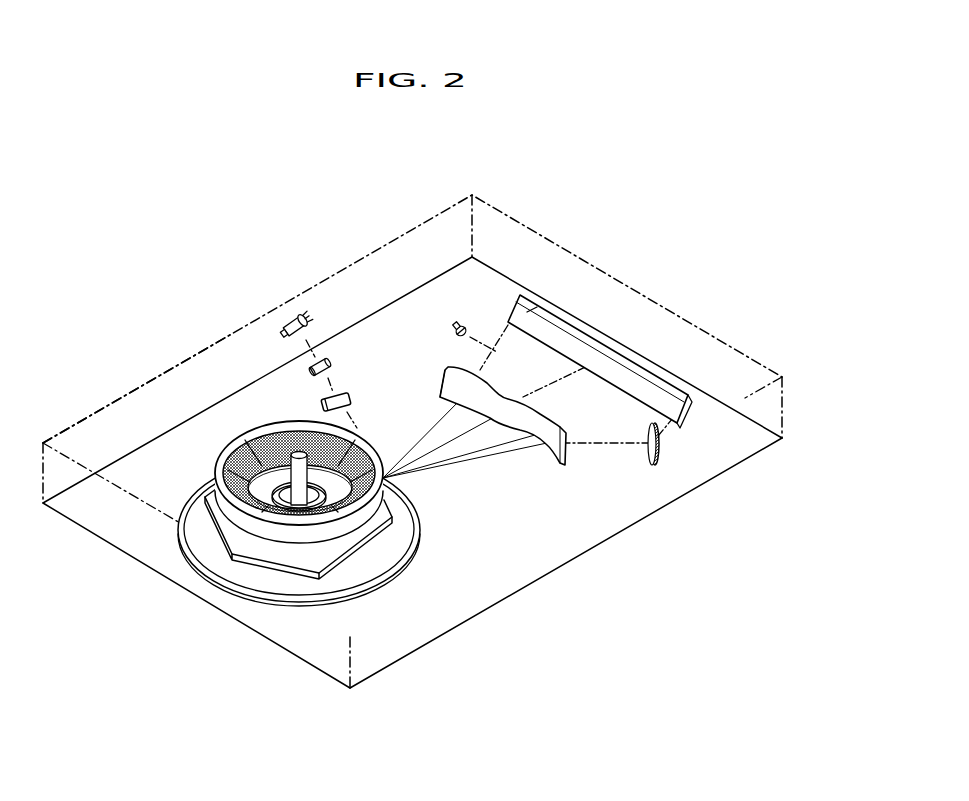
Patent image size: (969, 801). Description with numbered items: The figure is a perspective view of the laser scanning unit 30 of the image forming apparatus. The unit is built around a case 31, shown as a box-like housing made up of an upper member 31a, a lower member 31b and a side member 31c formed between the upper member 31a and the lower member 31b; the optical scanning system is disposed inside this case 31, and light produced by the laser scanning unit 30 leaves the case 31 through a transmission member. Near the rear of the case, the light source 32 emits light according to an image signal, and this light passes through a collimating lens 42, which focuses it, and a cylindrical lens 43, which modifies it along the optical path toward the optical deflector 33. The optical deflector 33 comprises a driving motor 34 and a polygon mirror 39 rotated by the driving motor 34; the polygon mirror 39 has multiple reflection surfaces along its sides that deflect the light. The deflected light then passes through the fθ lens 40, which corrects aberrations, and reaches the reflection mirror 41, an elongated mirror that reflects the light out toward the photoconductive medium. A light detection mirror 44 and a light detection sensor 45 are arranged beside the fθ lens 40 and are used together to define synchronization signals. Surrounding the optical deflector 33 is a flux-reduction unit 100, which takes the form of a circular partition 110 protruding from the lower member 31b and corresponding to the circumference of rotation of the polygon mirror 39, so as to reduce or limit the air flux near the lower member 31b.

The laser scanning unit 30 is at (640, 205).
The case 31 is at (397, 413).
The upper member 31a is at (125, 407).
The lower member 31b is at (147, 573).
The side member 31c is at (83, 508).
The light source 32 is at (302, 312).
The optical deflector 33 is at (284, 576).
The driving motor 34 is at (290, 545).
The polygon mirror 39 is at (250, 558).
The fθ lens 40 is at (555, 462).
The reflection mirror 41 is at (678, 421).
The collimating lens 42 is at (325, 360).
The cylindrical lens 43 is at (347, 397).
The light detection mirror 44 is at (650, 447).
The light detection sensor 45 is at (467, 328).
The circular partition 110 is at (420, 538).
The flux-reduction unit 100 is at (351, 532).